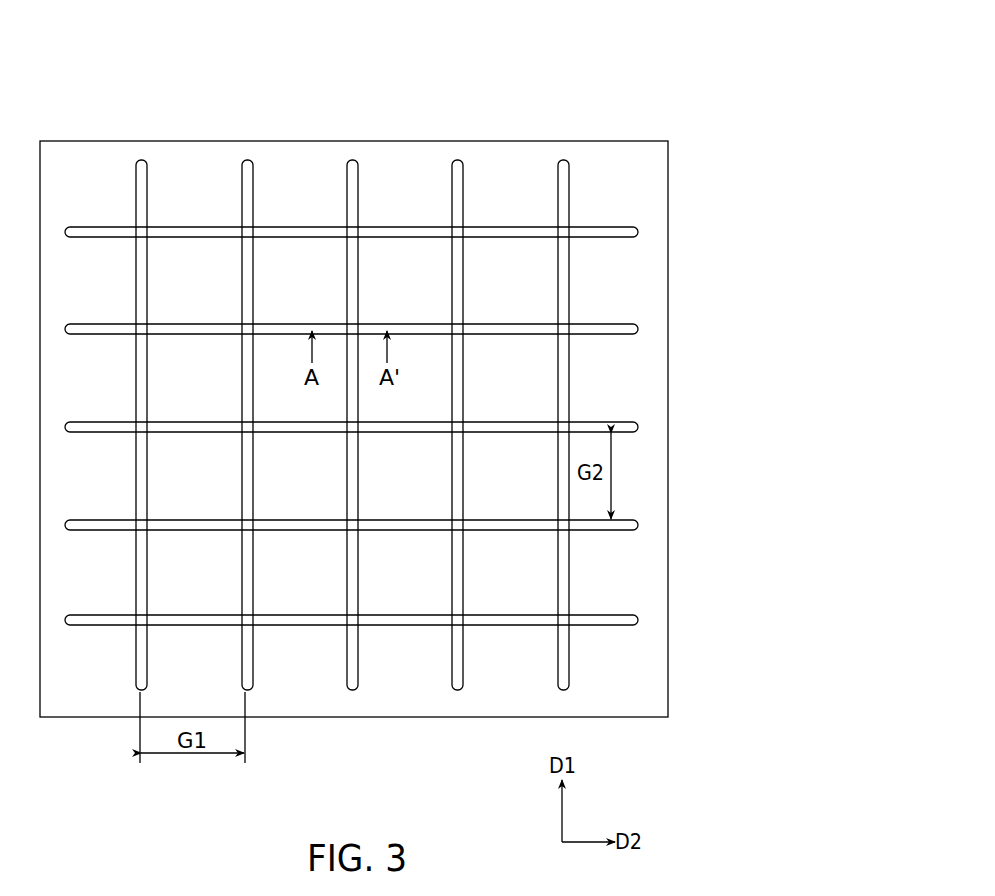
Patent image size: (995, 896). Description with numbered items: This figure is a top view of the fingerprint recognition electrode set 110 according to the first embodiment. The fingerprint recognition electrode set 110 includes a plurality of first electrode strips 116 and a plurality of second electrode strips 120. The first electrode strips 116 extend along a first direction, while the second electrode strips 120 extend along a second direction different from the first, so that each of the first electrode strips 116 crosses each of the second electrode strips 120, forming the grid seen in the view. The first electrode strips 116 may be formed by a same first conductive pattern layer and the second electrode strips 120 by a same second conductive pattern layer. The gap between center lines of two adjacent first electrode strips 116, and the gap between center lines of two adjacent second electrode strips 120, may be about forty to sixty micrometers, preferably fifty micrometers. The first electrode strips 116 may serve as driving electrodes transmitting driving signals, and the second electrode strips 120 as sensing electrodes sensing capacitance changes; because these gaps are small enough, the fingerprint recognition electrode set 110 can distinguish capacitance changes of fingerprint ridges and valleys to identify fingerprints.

The fingerprint recognition electrode set 110 is at (588, 71).
The first electrode strips 116 is at (352, 162).
The second electrode strips 120 is at (616, 230).